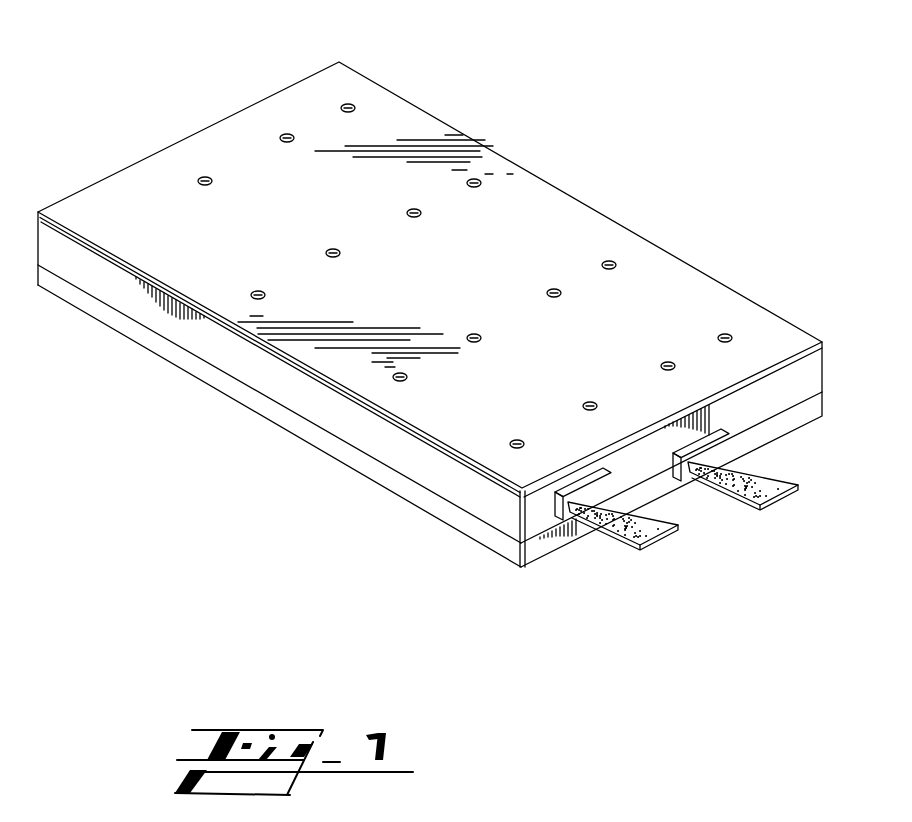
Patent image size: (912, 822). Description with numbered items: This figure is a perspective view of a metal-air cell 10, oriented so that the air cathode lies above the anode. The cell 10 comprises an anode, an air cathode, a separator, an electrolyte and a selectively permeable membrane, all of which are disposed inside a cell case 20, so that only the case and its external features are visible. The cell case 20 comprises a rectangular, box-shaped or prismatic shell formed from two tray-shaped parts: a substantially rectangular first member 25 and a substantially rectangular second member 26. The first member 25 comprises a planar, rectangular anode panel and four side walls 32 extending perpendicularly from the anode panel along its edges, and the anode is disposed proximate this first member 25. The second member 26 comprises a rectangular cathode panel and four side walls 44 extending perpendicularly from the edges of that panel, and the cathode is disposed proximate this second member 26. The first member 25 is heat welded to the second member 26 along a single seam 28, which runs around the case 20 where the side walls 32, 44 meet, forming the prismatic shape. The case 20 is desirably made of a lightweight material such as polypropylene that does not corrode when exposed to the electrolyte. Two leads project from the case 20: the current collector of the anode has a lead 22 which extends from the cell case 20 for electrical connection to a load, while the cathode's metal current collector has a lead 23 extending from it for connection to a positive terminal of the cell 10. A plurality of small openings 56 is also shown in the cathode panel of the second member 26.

The metal-air cell 10 is at (557, 127).
The cell case 20 is at (407, 98).
The second member 26 is at (200, 128).
The side walls 44 is at (58, 253).
The first member 25 is at (233, 400).
The side walls 32 is at (305, 428).
The seam 28 is at (810, 390).
The holes 56 is at (206, 186).
The lead 23 is at (663, 542).
The lead 22 is at (790, 500).